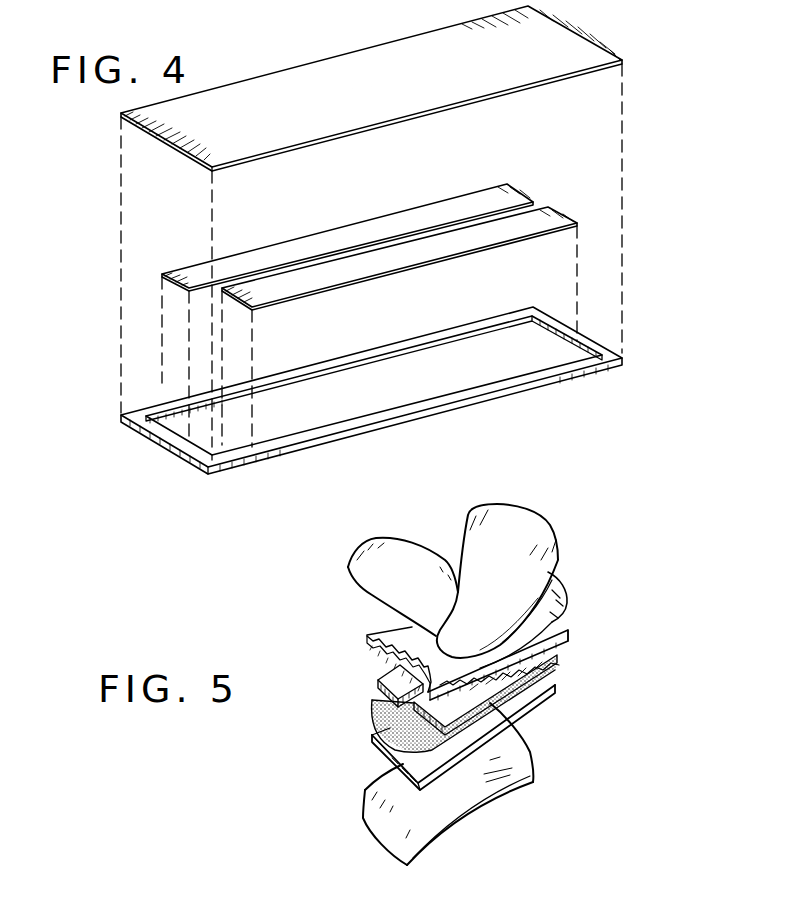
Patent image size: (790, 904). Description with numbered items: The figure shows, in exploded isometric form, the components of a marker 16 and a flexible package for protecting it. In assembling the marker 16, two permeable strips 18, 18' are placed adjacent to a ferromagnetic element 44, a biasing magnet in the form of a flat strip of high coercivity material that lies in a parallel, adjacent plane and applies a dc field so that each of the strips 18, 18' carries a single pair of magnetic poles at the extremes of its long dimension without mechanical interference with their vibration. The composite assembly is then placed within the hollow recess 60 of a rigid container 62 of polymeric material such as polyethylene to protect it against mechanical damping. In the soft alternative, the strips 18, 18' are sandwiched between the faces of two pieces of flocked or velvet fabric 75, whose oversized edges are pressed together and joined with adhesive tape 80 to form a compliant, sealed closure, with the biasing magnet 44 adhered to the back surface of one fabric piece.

In FIG. 4, the marker 16 is at (114, 472).
In FIG. 5, the marker 16 is at (562, 735).
In FIG. 4, the strip 18 is at (347, 237).
In FIG. 5, the strip 18 is at (435, 684).
In FIG. 4, the strip 18' is at (399, 258).
In FIG. 5, the strip 18' is at (497, 659).
In FIG. 4, the ferromagnetic element 44 is at (378, 93).
In FIG. 5, the ferromagnetic element 44 is at (386, 746).
In FIG. 4, the hollow recess 60 is at (350, 408).
In FIG. 4, the rigid container 62 is at (443, 412).
In FIG. 5, the flocked or velvet fabric 75 is at (557, 590).
In FIG. 5, the adhesive tape 80 is at (533, 524).